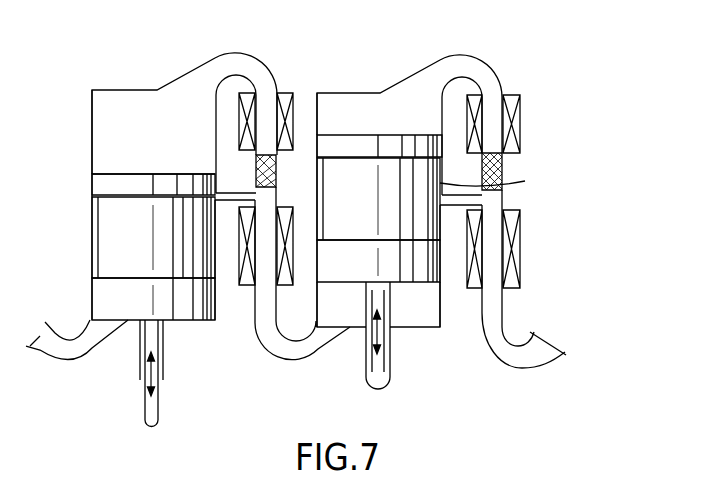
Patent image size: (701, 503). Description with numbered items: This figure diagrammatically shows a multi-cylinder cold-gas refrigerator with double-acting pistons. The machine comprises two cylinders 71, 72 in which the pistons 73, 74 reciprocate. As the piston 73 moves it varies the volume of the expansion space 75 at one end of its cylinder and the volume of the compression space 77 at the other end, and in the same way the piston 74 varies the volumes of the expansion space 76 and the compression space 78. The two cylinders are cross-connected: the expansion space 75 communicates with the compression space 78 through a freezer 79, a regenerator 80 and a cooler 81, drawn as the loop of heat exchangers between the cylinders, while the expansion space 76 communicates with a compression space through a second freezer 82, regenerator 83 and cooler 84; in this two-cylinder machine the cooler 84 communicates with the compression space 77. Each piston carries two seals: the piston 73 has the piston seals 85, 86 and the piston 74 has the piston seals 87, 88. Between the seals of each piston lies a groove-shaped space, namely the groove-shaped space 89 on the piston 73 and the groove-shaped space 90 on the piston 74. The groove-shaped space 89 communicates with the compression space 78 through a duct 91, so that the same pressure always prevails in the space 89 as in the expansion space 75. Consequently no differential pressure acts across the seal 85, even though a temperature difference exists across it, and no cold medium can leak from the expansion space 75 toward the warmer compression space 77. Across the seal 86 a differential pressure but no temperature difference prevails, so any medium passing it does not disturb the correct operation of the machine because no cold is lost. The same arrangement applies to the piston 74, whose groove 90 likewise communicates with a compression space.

The cylinder 71 is at (92, 262).
The cylinder 72 is at (440, 310).
The piston 73 is at (148, 243).
The piston 74 is at (368, 210).
The expansion space 75 is at (162, 138).
The expansion space 76 is at (387, 122).
The compression space 77 is at (100, 334).
The compression space 78 is at (425, 317).
The freezer 79 is at (267, 112).
The regenerator 80 is at (274, 165).
The cooler 81 is at (263, 268).
The freezer 82 is at (492, 112).
The regenerator 83 is at (503, 166).
The cooler 84 is at (492, 262).
The piston seal 85 is at (92, 183).
The piston seal 86 is at (92, 298).
The piston seal 87 is at (442, 150).
The piston seal 88 is at (440, 258).
The groove-shaped space 89 is at (92, 230).
The groove-shaped space 90 is at (525, 181).
The duct 91 is at (234, 193).